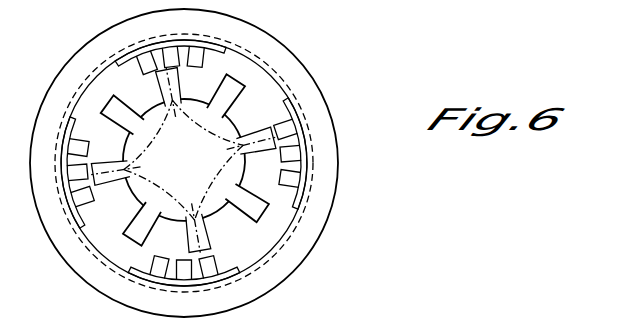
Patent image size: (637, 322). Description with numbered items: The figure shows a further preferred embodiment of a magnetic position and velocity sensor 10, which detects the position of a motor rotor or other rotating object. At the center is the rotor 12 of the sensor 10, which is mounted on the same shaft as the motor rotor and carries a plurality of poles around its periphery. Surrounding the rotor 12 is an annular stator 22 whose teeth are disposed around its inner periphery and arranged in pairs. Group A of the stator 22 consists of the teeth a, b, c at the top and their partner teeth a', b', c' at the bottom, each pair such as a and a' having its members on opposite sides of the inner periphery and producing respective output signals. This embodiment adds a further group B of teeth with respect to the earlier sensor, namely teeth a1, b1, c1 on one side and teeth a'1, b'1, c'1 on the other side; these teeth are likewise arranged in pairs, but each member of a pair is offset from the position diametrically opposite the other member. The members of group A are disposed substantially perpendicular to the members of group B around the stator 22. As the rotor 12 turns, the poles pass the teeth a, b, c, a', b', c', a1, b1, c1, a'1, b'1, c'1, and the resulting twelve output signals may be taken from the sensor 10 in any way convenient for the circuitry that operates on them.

The magnetic sensor 10 is at (326, 18).
The rotor 12 is at (183, 160).
The annular stator 22 is at (313, 74).
The stator tooth a is at (146, 42).
The stator tooth b is at (173, 37).
The stator tooth c is at (197, 37).
The stator tooth a1 is at (299, 124).
The stator tooth b1 is at (307, 152).
The stator tooth c1 is at (304, 186).
The stator tooth a' is at (209, 284).
The stator tooth b' is at (179, 288).
The stator tooth c' is at (152, 284).
The stator tooth a1' a'1 is at (69, 207).
The stator tooth b1' b'1 is at (62, 179).
The stator tooth c1' c'1 is at (62, 150).